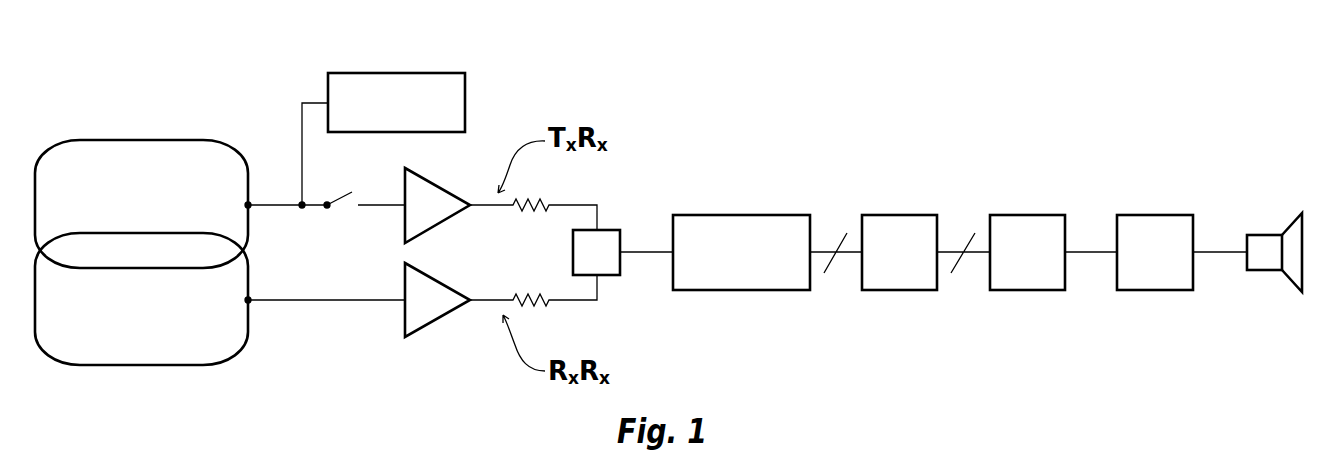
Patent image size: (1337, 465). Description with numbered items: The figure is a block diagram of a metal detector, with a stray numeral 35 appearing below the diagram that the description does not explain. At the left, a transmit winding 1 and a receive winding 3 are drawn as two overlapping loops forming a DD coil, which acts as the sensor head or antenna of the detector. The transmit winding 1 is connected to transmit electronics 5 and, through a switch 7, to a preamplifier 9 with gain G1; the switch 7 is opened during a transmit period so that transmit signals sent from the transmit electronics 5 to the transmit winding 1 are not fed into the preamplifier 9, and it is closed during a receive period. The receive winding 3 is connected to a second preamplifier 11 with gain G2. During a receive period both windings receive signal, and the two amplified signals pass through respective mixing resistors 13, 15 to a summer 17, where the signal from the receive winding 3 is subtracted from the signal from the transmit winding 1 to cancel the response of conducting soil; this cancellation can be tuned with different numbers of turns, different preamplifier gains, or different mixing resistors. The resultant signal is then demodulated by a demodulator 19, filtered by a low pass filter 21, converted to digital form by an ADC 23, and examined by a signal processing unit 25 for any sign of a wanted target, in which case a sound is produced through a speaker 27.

The transmit winding 1 is at (82, 141).
The receive winding 3 is at (228, 352).
The transmit electronics 5 is at (432, 73).
The switch 7 is at (342, 208).
The preamplifier 9 is at (403, 185).
The preamplifier 11 is at (404, 318).
The mixing resistor 13 is at (518, 208).
The mixing resistor 15 is at (540, 305).
The summer 17 is at (616, 230).
The demodulator 19 is at (753, 230).
The low pass filter 21 is at (898, 230).
The ADC 23 is at (1030, 230).
The signal processing unit 25 is at (1165, 230).
The speaker 27 is at (1265, 234).
The metal detector 35 is at (433, 464).